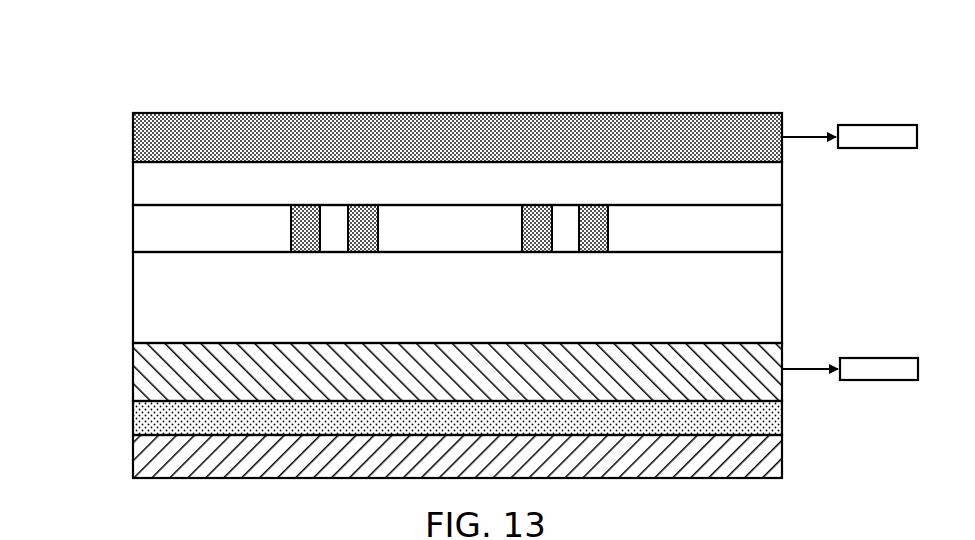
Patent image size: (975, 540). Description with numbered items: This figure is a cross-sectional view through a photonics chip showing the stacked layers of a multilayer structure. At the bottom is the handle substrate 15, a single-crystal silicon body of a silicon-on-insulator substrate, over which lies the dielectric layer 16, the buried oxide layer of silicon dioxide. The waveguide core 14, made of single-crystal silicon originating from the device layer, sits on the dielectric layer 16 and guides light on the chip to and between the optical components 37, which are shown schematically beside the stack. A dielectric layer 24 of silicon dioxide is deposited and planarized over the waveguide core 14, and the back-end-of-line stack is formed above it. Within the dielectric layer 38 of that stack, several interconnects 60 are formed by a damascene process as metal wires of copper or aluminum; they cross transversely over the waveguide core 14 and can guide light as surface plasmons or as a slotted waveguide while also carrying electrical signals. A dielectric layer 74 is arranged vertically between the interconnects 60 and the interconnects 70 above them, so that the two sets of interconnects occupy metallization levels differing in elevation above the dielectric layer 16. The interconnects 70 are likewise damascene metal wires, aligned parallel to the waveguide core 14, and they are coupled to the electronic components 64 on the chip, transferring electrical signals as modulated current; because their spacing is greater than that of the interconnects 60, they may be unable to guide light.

The interconnects 70 is at (160, 132).
The dielectric layer 74 is at (158, 186).
The dielectric layer 38 is at (745, 234).
The interconnects 60 is at (308, 228).
The dielectric layer 24 is at (158, 291).
The waveguide core 14 is at (150, 375).
The dielectric layer 16 is at (742, 427).
The handle substrate 15 is at (742, 465).
The electronic components 64 is at (876, 133).
The optical components 37 is at (878, 366).